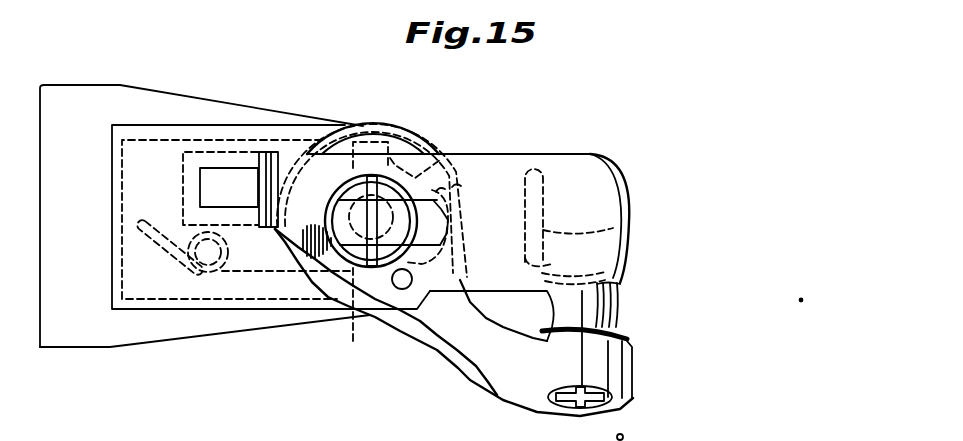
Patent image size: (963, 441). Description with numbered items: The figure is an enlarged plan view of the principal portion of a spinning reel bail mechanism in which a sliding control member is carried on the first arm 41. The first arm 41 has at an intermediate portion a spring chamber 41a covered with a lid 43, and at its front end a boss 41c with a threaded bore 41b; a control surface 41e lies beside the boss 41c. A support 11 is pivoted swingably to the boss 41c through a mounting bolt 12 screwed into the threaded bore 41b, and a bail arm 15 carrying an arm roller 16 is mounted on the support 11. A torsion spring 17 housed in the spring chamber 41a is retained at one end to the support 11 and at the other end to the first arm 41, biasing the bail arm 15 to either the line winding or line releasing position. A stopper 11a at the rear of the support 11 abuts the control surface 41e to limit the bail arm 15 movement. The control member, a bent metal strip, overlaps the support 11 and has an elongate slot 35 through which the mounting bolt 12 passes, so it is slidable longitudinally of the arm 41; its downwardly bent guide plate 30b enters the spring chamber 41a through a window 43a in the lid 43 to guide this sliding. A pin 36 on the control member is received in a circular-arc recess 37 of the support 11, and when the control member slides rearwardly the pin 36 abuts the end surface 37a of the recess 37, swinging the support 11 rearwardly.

The support 11 is at (497, 358).
The stopper 11a is at (425, 185).
The mounting bolt 12 is at (338, 248).
The bail arm 15 is at (545, 193).
The arm roller 16 is at (607, 310).
The torsion spring 17 is at (207, 273).
The guide plate 30b is at (207, 157).
The elongate slot 35 is at (440, 192).
The pin 36 is at (402, 289).
The recess 37 is at (480, 188).
The end surface 37a is at (437, 200).
The first arm 41 is at (133, 92).
The spring chamber 41a is at (157, 145).
The threaded bore 41b is at (368, 142).
The boss 41c is at (342, 265).
The control surface 41e is at (385, 268).
The lid 43 is at (143, 278).
The window 43a is at (230, 170).